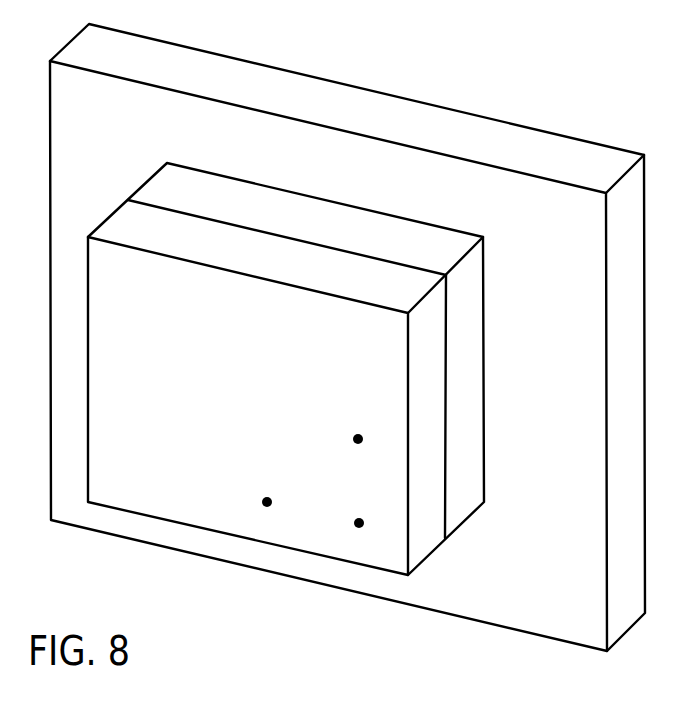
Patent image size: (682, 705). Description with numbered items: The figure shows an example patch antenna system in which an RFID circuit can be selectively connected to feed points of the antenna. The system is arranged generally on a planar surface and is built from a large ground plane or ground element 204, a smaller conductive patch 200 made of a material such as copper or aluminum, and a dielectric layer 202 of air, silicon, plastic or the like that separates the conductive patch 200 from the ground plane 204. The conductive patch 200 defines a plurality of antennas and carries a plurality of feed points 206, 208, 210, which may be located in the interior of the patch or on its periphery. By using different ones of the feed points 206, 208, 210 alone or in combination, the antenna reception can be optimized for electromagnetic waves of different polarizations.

The conductive patch 200 is at (286, 366).
The dielectric layer 202 is at (270, 213).
The ground plane 204 is at (517, 141).
The feed point 206 is at (361, 433).
The feed point 208 is at (269, 496).
The feed point 210 is at (357, 517).